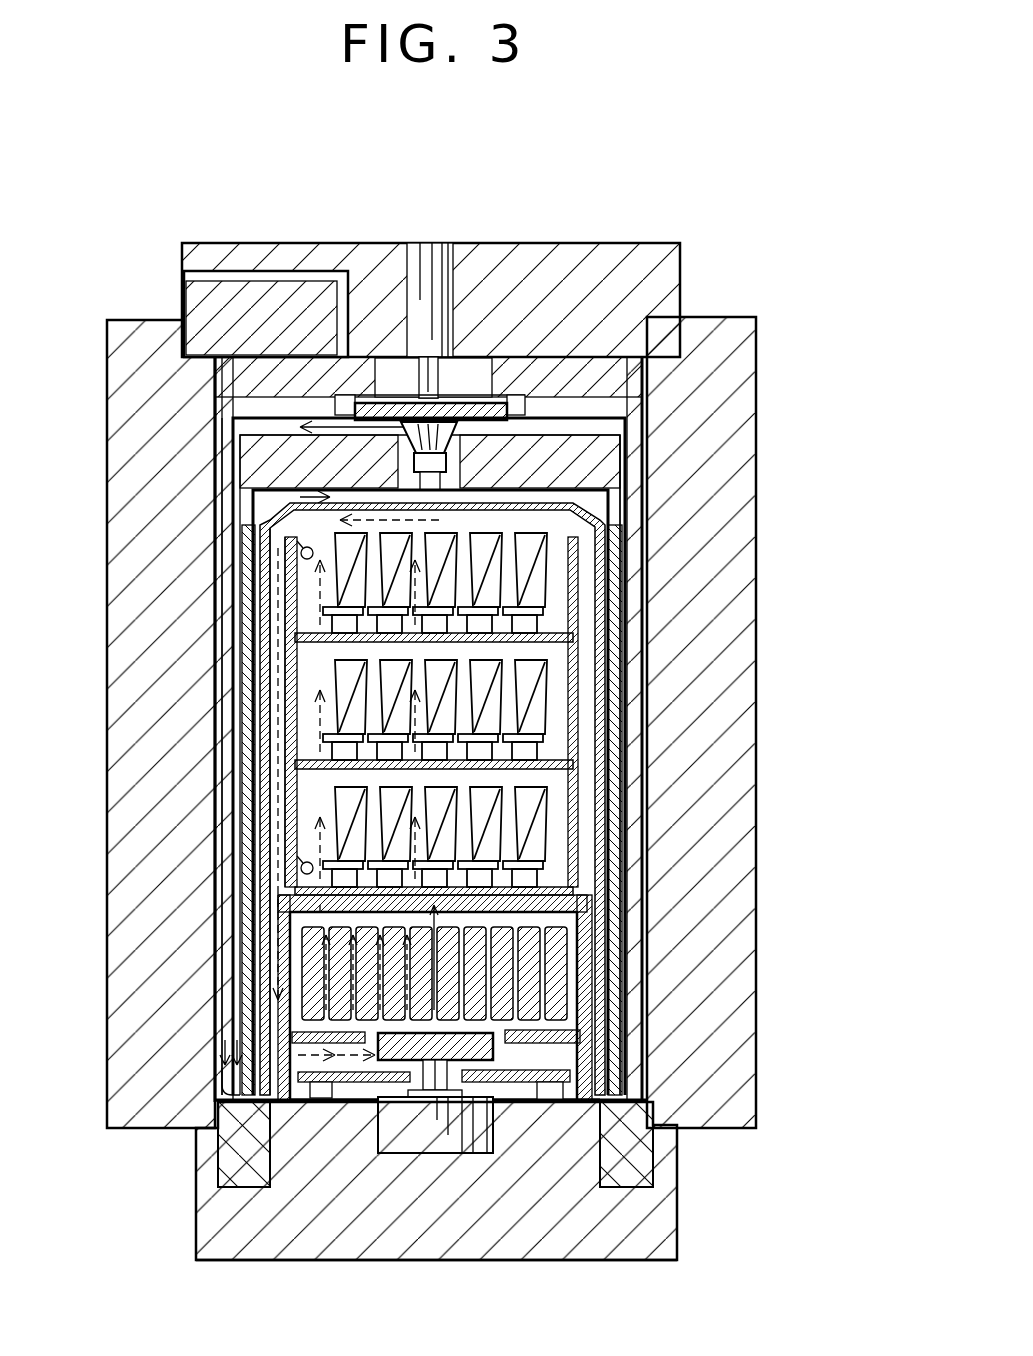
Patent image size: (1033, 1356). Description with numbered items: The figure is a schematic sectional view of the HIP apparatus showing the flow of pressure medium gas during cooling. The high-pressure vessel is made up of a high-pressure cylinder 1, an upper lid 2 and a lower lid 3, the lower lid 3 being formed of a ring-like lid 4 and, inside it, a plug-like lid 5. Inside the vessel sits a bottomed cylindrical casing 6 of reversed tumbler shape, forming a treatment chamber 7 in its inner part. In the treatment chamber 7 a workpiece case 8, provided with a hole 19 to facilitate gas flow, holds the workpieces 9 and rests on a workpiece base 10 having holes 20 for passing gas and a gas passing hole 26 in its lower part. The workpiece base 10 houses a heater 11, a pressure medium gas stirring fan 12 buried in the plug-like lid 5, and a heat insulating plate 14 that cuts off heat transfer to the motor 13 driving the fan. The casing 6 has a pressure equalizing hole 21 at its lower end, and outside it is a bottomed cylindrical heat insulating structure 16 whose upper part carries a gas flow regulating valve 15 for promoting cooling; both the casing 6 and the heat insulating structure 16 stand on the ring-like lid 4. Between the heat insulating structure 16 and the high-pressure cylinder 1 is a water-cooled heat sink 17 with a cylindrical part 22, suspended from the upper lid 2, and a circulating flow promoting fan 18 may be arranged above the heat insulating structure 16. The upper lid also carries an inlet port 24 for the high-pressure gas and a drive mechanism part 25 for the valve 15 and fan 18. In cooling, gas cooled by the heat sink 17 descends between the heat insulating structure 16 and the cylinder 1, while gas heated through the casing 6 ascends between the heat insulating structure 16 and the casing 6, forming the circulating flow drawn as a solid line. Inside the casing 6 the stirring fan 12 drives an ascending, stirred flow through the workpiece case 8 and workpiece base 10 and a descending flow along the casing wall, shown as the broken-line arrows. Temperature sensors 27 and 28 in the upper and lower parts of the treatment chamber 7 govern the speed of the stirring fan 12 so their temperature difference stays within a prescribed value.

The high-pressure cylinder 1 is at (760, 325).
The upper lid 2 is at (594, 240).
The lower lid 3 is at (692, 1212).
The ring-like lid 4 is at (647, 1170).
The plug-like lid 5 is at (640, 1243).
The casing 6 is at (607, 637).
The treatment chamber 7 is at (250, 482).
The workpiece case 8 is at (582, 772).
The workpieces 9 is at (547, 697).
The workpiece base 10 is at (612, 898).
The heater 11 is at (602, 950).
The pressure medium gas stirring fan 12 is at (500, 1057).
The motor 13 is at (378, 1133).
The heat insulating plate 14 is at (505, 1103).
The gas flow regulating valve 15 is at (505, 450).
The heat insulating structure 16 is at (632, 570).
The heat sink 17 is at (650, 456).
The circulating flow promoting fan 18 is at (532, 405).
The hole 19 is at (325, 748).
The holes 20 is at (330, 1008).
The pressure equalizing hole 21 is at (565, 1076).
The cylindrical part 22 is at (634, 822).
The inlet port 24 is at (255, 275).
The drive mechanism part 25 is at (456, 268).
The gas passing hole 26 is at (562, 1012).
The temperature sensor 27 is at (262, 520).
The temperature sensor 28 is at (237, 885).